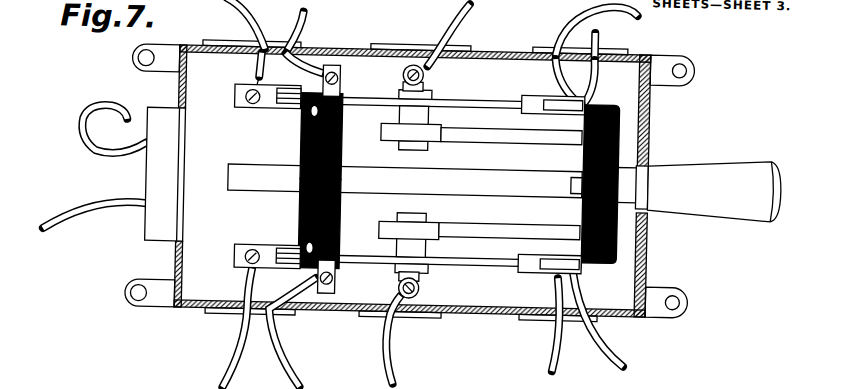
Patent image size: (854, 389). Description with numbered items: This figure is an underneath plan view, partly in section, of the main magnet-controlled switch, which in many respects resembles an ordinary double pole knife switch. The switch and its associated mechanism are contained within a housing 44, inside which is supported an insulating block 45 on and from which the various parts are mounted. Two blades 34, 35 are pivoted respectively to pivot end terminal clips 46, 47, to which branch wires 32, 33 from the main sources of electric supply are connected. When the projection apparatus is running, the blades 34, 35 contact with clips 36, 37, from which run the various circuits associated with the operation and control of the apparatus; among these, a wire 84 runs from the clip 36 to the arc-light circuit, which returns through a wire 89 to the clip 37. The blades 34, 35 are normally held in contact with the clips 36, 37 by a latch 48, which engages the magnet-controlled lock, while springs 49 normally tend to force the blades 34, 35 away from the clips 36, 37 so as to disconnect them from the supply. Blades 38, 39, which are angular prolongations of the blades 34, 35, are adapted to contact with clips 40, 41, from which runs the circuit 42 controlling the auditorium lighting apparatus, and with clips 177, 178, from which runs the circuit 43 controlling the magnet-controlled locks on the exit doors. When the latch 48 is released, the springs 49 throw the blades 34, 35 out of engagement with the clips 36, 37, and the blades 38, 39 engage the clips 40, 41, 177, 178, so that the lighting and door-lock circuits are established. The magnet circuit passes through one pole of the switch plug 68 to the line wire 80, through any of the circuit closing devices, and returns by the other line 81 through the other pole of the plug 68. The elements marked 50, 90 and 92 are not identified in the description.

The branch wire 32 is at (391, 353).
The branch wire 33 is at (452, 26).
The blade 34 is at (489, 245).
The blade 35 is at (464, 106).
The clip 36 is at (521, 272).
The clip 37 is at (531, 96).
The blade 38 is at (366, 259).
The blade 39 is at (373, 105).
The clip 40 is at (281, 248).
The clip 41 is at (270, 113).
The circuit 42 is at (246, 17).
The circuit 43 is at (299, 33).
The housing 44 is at (650, 104).
The insulating block 45 is at (176, 268).
The pivot end terminal clip 46 is at (420, 283).
The pivot end terminal clip 47 is at (431, 80).
The latch 48 is at (616, 204).
The springs 49 is at (496, 141).
The insulating block 50 is at (606, 147).
The switch plug 68 is at (144, 187).
The line wire 80 is at (88, 151).
The line 81 is at (64, 217).
The wire 84 is at (556, 346).
The wire 89 is at (583, 15).
The conductor wire 90 is at (598, 37).
The conductor wire 92 is at (607, 341).
The clip 177 is at (337, 284).
The clip 178 is at (339, 95).